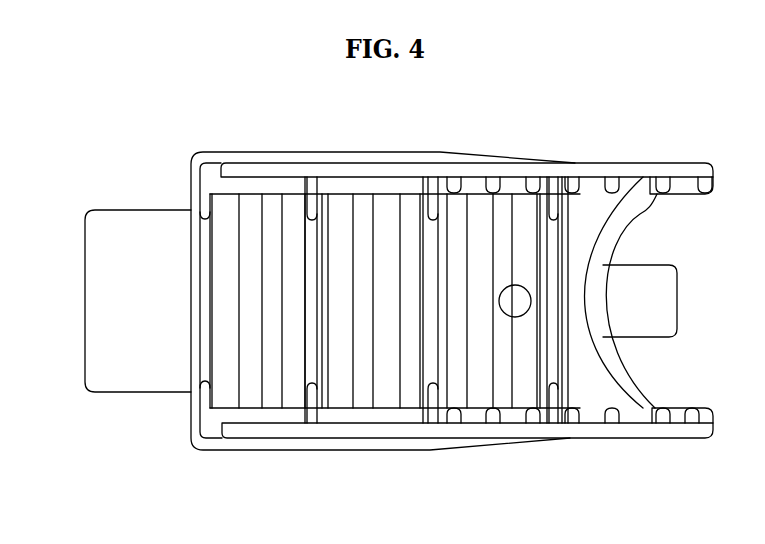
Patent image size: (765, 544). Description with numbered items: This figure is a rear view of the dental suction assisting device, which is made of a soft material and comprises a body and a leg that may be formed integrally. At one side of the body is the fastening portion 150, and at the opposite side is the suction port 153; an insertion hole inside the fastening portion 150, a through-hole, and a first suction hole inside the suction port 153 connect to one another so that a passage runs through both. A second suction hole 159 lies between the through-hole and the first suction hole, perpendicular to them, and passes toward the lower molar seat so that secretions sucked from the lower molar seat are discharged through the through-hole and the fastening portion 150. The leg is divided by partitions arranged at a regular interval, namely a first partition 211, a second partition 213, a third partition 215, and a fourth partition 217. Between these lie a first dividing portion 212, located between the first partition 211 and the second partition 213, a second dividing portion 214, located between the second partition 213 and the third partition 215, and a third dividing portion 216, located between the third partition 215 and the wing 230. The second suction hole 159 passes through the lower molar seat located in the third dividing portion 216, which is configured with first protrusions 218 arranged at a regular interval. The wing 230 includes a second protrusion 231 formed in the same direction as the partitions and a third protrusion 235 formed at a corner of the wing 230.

The fastening portion 150 is at (100, 223).
The suction port 153 is at (653, 277).
The second suction hole 159 is at (532, 300).
The first partition 211 is at (197, 175).
The first dividing portion 212 is at (310, 465).
The second partition 213 is at (310, 190).
The second dividing portion 214 is at (432, 465).
The third partition 215 is at (435, 177).
The third dividing portion 216 is at (545, 465).
The fourth partition 217 is at (592, 192).
The first protrusions 218 is at (490, 180).
The wing 230 is at (685, 168).
The second protrusion 231 is at (612, 423).
The third protrusion 235 is at (707, 420).